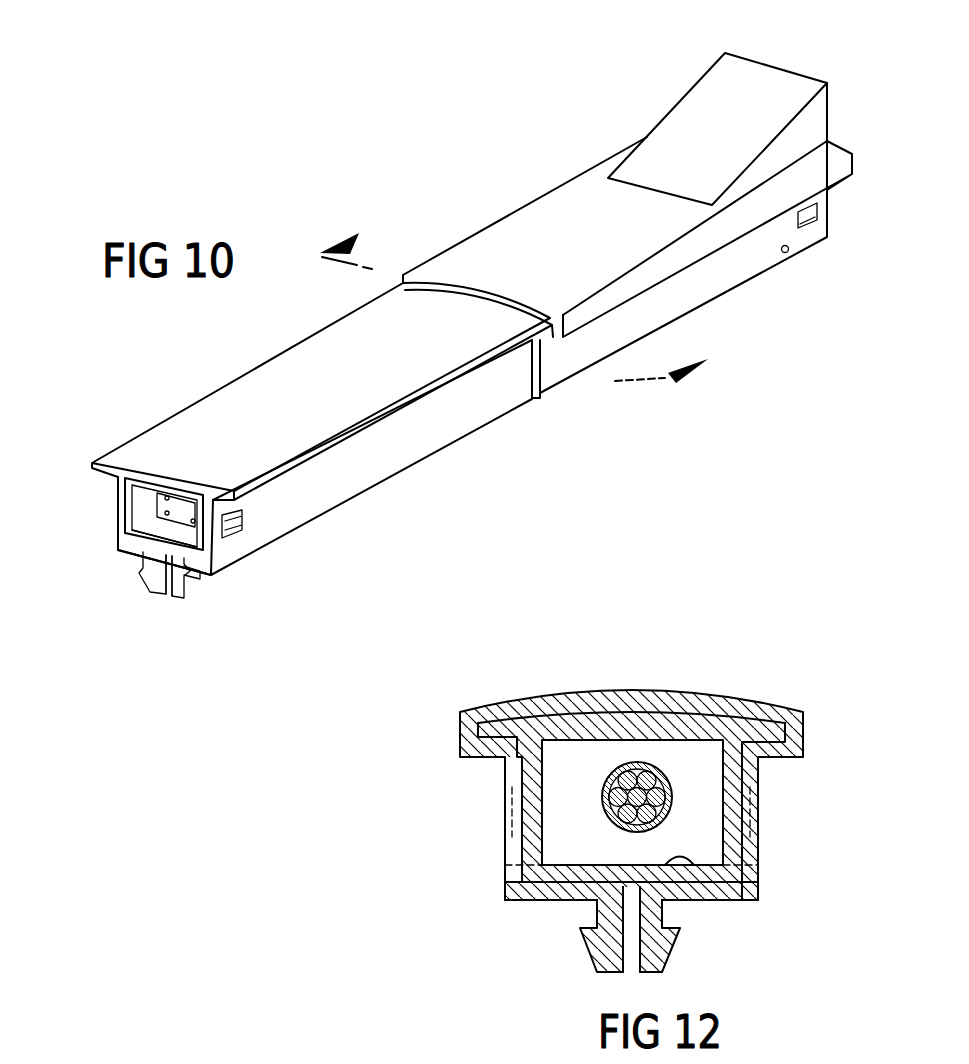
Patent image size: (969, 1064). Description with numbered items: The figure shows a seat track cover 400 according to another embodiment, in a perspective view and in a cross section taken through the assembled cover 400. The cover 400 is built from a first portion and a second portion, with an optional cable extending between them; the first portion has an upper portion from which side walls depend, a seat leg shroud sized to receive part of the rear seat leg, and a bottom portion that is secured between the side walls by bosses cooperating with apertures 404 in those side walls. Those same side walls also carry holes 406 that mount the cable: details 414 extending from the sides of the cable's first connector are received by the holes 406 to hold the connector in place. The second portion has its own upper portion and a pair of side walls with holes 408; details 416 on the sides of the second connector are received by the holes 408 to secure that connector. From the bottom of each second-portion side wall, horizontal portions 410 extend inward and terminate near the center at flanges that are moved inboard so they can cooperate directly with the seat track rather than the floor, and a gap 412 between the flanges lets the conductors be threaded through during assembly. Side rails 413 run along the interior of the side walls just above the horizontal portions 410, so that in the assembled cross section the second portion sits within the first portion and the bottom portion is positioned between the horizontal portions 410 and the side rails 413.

In FIG. 10, the seat track cover 400 is at (360, 128).
In FIG. 12, the seat track cover 400 is at (527, 668).
In FIG. 10, the apertures 404 is at (788, 255).
In FIG. 12, the apertures 404 is at (505, 880).
In FIG. 10, the holes 406 is at (817, 210).
In FIG. 12, the holes 406 is at (505, 798).
In FIG. 10, the holes 408 is at (233, 532).
In FIG. 10, the horizontal portions 410 is at (118, 557).
In FIG. 12, the horizontal portions 410 is at (532, 905).
In FIG. 10, the gap 412 is at (166, 592).
In FIG. 12, the gap 412 is at (630, 965).
In FIG. 12, the side rails 413 is at (542, 866).
In FIG. 10, the details 414 is at (803, 208).
In FIG. 10, the details 416 is at (250, 522).